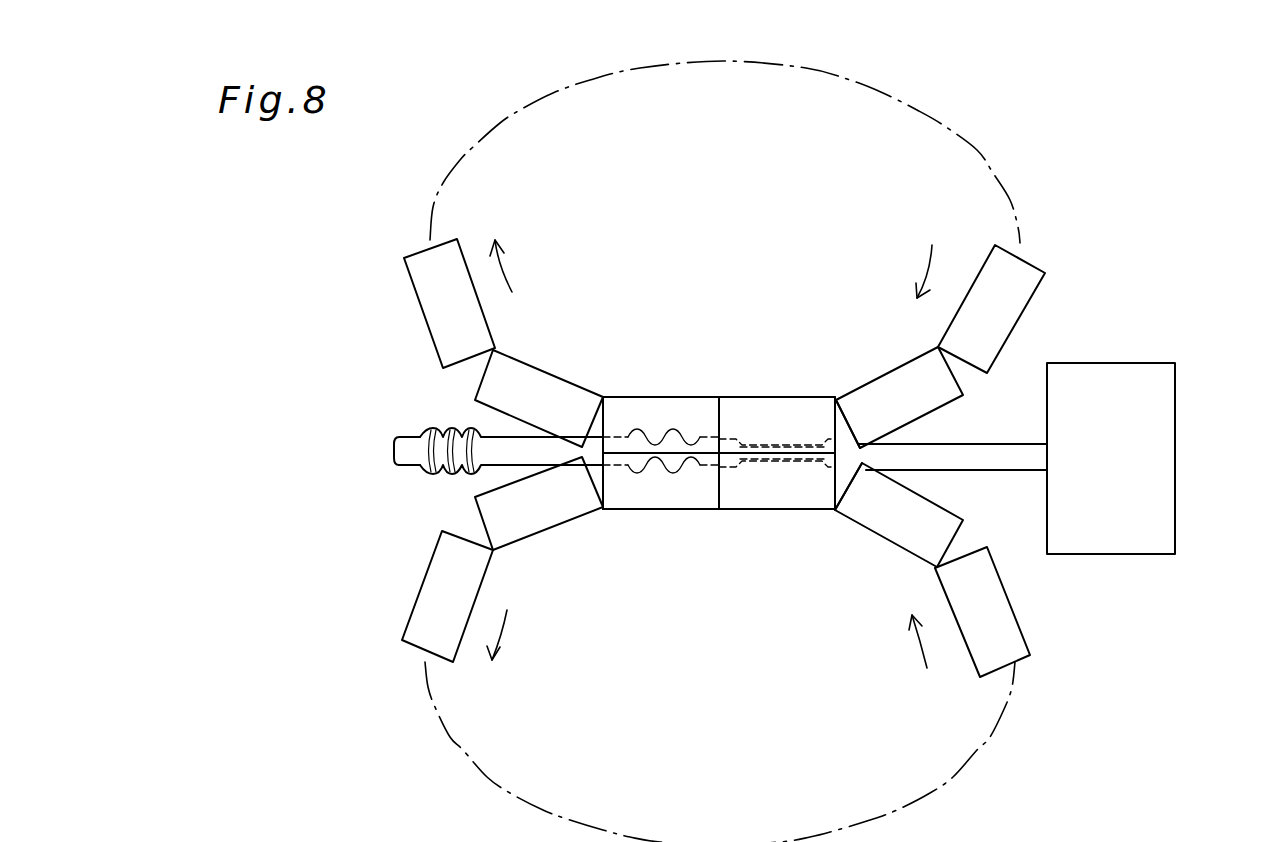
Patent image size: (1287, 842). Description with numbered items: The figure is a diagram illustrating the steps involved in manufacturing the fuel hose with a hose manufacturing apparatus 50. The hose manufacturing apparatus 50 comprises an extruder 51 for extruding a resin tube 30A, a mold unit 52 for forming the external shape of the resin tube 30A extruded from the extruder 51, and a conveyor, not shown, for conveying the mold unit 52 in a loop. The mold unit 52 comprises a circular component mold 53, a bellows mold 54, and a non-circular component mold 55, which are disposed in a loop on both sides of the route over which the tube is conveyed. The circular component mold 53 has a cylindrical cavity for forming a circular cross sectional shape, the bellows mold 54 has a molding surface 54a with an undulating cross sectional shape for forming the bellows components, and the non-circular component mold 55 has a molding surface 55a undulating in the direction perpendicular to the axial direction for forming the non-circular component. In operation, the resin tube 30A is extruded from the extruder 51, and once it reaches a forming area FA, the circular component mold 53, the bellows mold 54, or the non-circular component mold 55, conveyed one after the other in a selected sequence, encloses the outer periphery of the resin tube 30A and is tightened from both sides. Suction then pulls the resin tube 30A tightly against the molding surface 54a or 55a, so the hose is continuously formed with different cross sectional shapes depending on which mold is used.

The hose manufacturing apparatus 50 is at (1119, 198).
The extruder 51 is at (1164, 395).
The mold unit 52 is at (703, 421).
The circular component mold 53 is at (572, 376).
The bellows mold 54 is at (660, 456).
The molding surface 54a is at (626, 470).
The non-circular component mold 55 is at (777, 456).
The molding surface 55a is at (772, 470).
The resin tube 30A is at (1001, 444).
The forming area FA is at (847, 430).